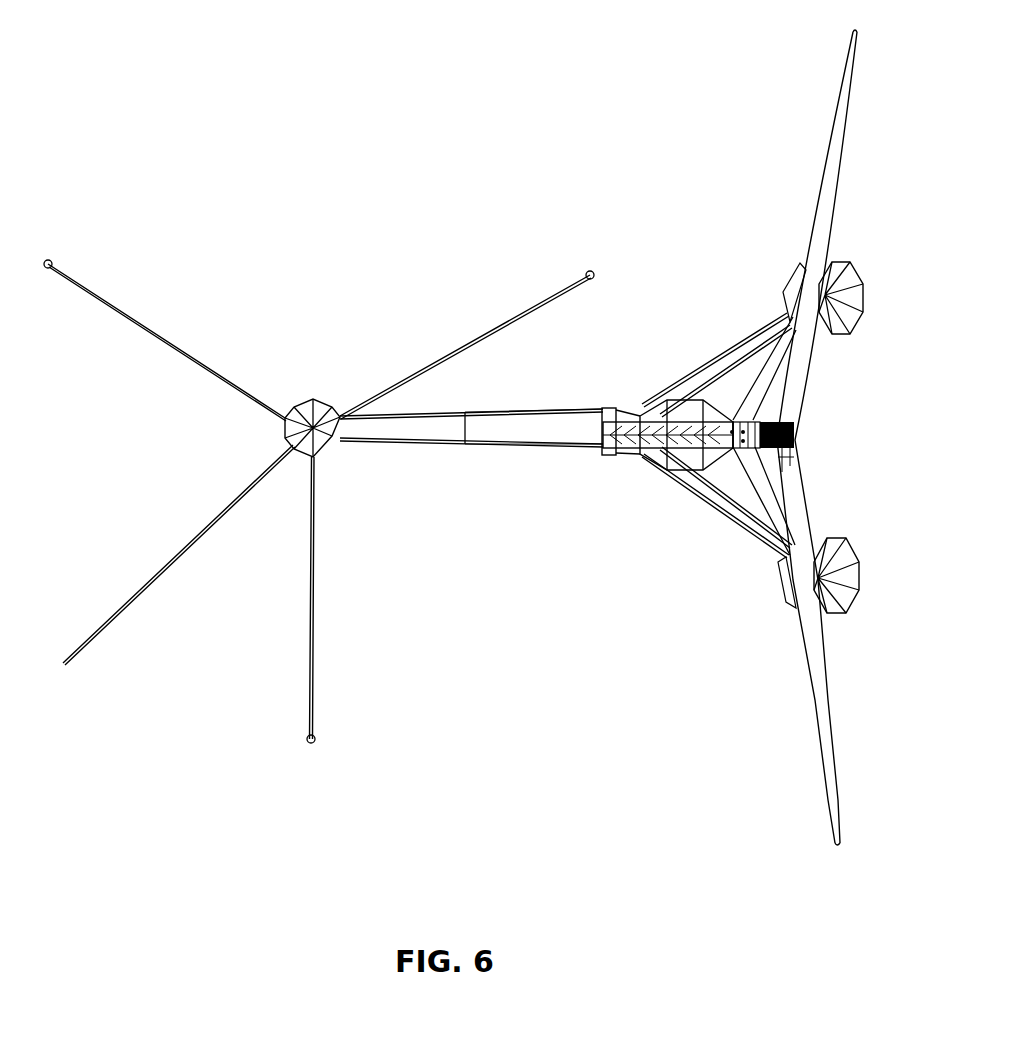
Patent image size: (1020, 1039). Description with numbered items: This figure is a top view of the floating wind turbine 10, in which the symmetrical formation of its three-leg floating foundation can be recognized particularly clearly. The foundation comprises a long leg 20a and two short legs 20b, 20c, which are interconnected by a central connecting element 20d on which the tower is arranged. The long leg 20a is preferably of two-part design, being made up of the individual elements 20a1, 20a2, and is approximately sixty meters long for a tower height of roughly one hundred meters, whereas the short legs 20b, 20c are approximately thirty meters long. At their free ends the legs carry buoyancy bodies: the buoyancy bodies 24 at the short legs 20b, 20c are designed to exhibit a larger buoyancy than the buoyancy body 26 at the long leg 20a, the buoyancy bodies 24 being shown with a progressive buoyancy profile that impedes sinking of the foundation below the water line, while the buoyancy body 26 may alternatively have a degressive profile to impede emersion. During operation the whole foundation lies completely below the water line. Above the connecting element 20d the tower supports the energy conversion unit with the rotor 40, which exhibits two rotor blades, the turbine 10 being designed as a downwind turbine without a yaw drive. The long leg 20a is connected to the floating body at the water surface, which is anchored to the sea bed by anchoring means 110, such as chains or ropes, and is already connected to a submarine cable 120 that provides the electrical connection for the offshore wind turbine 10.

The floating wind turbine 10 is at (409, 130).
The long leg 20a is at (563, 524).
The first individual element of the long leg 20a1 is at (404, 428).
The second individual element of the long leg 20a2 is at (516, 430).
The short leg 20b is at (730, 357).
The short leg 20c is at (701, 490).
The connecting element 20d is at (616, 414).
The buoyancy body 24 is at (790, 290).
The buoyancy body 26 is at (315, 402).
The rotor 40 is at (806, 436).
The anchoring means 110 is at (172, 340).
The submarine cable 120 is at (208, 530).